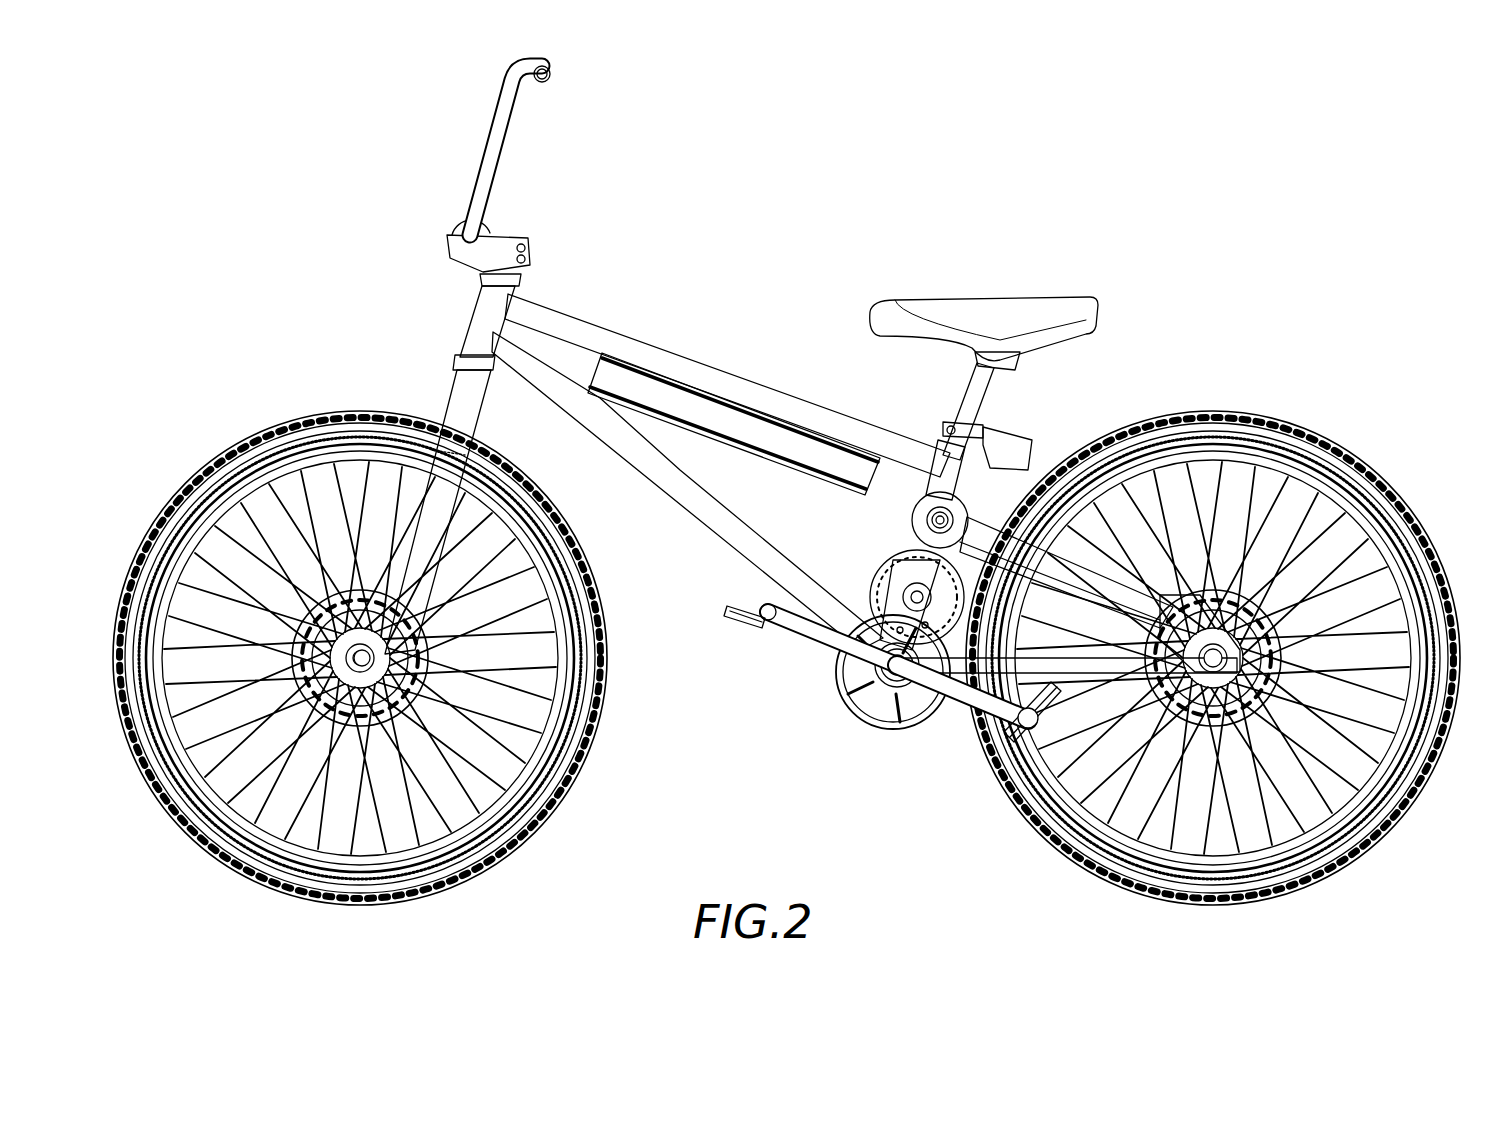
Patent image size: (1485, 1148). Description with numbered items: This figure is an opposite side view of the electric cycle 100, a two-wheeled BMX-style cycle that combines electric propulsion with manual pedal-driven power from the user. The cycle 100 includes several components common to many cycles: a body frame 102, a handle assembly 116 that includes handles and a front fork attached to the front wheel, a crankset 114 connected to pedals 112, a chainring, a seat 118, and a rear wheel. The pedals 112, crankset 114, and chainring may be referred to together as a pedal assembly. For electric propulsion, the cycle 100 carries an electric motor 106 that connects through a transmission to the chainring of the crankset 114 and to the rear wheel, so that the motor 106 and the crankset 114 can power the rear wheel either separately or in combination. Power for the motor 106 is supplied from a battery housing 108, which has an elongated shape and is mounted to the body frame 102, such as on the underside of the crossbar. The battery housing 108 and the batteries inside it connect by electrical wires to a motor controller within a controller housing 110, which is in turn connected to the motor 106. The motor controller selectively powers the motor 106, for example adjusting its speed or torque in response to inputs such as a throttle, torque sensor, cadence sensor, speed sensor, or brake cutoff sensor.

The electric cycle 100 is at (786, 481).
The body frame 102 is at (850, 442).
The electric motor 106 is at (857, 567).
The battery housing 108 is at (734, 391).
The controller housing 110 is at (1067, 395).
The pedals 112 is at (991, 789).
The crankset 114 is at (938, 748).
The handle assembly 116 is at (444, 150).
The seat 118 is at (1009, 281).